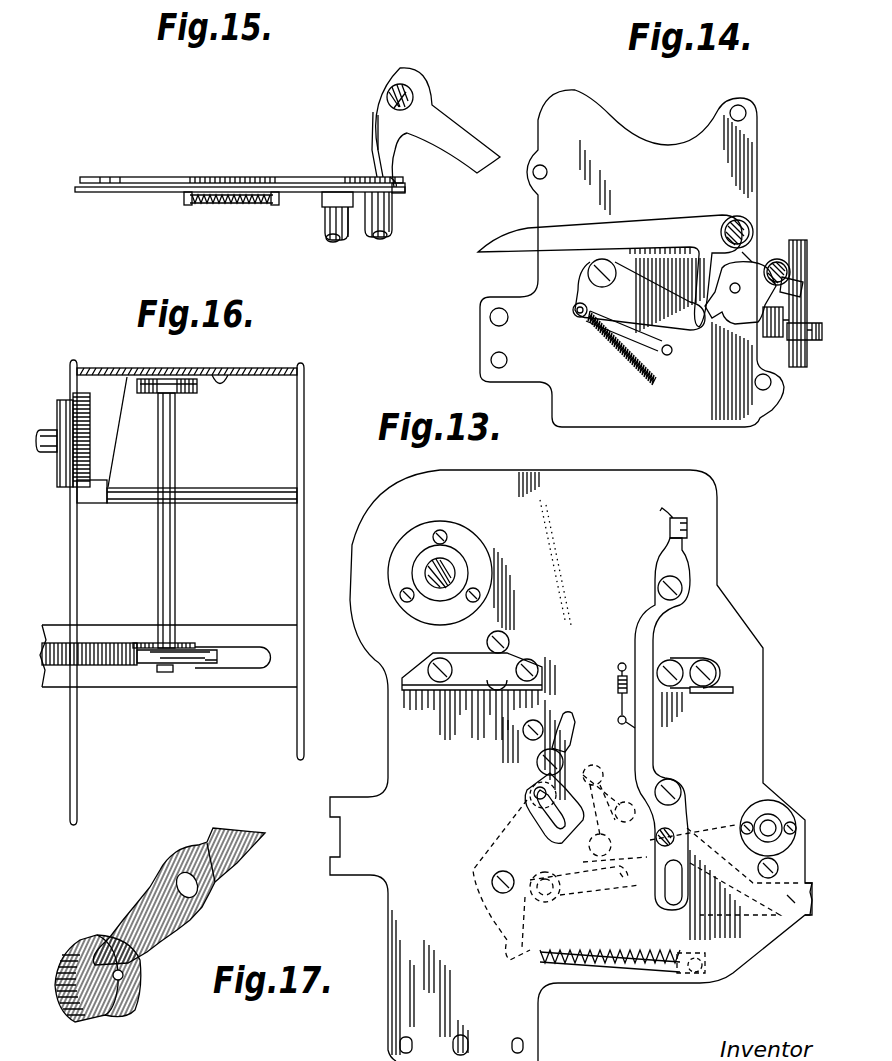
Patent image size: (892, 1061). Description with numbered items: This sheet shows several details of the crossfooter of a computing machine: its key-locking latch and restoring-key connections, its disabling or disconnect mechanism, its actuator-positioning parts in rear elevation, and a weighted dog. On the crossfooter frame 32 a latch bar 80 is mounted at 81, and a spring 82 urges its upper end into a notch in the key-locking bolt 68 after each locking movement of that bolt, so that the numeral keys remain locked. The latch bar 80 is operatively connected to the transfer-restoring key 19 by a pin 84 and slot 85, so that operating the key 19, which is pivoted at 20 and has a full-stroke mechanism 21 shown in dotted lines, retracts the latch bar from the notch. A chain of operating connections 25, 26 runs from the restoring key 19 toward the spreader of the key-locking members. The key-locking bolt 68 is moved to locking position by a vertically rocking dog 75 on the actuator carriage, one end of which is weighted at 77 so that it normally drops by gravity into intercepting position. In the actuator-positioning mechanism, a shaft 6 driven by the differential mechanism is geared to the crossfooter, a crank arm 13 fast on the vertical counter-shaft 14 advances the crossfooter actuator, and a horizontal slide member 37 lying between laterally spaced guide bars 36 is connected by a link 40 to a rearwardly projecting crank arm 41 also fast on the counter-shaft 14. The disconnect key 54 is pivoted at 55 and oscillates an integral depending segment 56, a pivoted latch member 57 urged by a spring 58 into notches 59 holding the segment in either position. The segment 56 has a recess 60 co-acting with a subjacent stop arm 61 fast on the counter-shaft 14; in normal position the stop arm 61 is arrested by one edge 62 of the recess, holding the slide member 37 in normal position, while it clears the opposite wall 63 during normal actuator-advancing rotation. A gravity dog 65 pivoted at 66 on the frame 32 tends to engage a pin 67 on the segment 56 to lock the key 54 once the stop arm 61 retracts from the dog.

In FIG. 16, the shaft 6 is at (46, 436).
In FIG. 13, the shaft 6 is at (443, 570).
In FIG. 16, the crank arm 13 is at (140, 393).
In FIG. 15, the vertical counter-shaft 14 is at (413, 90).
In FIG. 14, the vertical counter-shaft 14 is at (808, 355).
In FIG. 16, the vertical counter-shaft 14 is at (168, 432).
In FIG. 13, the transfer-restoring key 19 is at (800, 912).
In FIG. 13, the pivot 20 is at (495, 878).
In FIG. 13, the full-stroke mechanism 21 is at (605, 895).
In FIG. 13, the operating connection 25 is at (572, 727).
In FIG. 13, the operating connection 26 is at (525, 802).
In FIG. 15, the crossfooter frame 32 is at (113, 180).
In FIG. 14, the crossfooter frame 32 is at (658, 155).
In FIG. 16, the crossfooter frame 32 is at (304, 527).
In FIG. 13, the crossfooter frame 32 is at (571, 765).
In FIG. 16, the guide bars 36 is at (45, 628).
In FIG. 16, the slide member 37 is at (95, 642).
In FIG. 16, the link 40 is at (225, 658).
In FIG. 15, the crank arm 41 is at (443, 122).
In FIG. 16, the crank arm 41 is at (150, 655).
In FIG. 15, the disabling or disconnect key 54 is at (93, 193).
In FIG. 14, the disabling or disconnect key 54 is at (530, 237).
In FIG. 15, the pivot 55 is at (330, 220).
In FIG. 14, the pivot 55 is at (738, 220).
In FIG. 15, the segment 56 is at (407, 183).
In FIG. 14, the segment 56 is at (743, 312).
In FIG. 14, the latch member 57 is at (585, 288).
In FIG. 15, the spring 58 is at (218, 203).
In FIG. 14, the spring 58 is at (613, 332).
In FIG. 14, the notches 59 is at (703, 330).
In FIG. 14, the recess 60 is at (798, 317).
In FIG. 15, the stop arm 61 is at (375, 140).
In FIG. 14, the stop arm 61 is at (782, 347).
In FIG. 16, the stop arm 61 is at (182, 643).
In FIG. 14, the edge of recess 62 is at (747, 322).
In FIG. 14, the opposite wall 63 is at (815, 253).
In FIG. 15, the gravity dog 65 is at (400, 203).
In FIG. 14, the gravity dog 65 is at (758, 260).
In FIG. 15, the pivot 66 is at (392, 222).
In FIG. 14, the pivot 66 is at (780, 260).
In FIG. 14, the pin 67 is at (730, 288).
In FIG. 13, the key-locking bolt 68 is at (670, 526).
In FIG. 17, the weighted dog 75 is at (197, 835).
In FIG. 17, the weight 77 is at (140, 1002).
In FIG. 13, the latch bar 80 is at (642, 617).
In FIG. 13, the mounting pivot 81 is at (683, 790).
In FIG. 13, the spring 82 is at (618, 666).
In FIG. 13, the pin 84 is at (675, 832).
In FIG. 13, the slot 85 is at (680, 852).